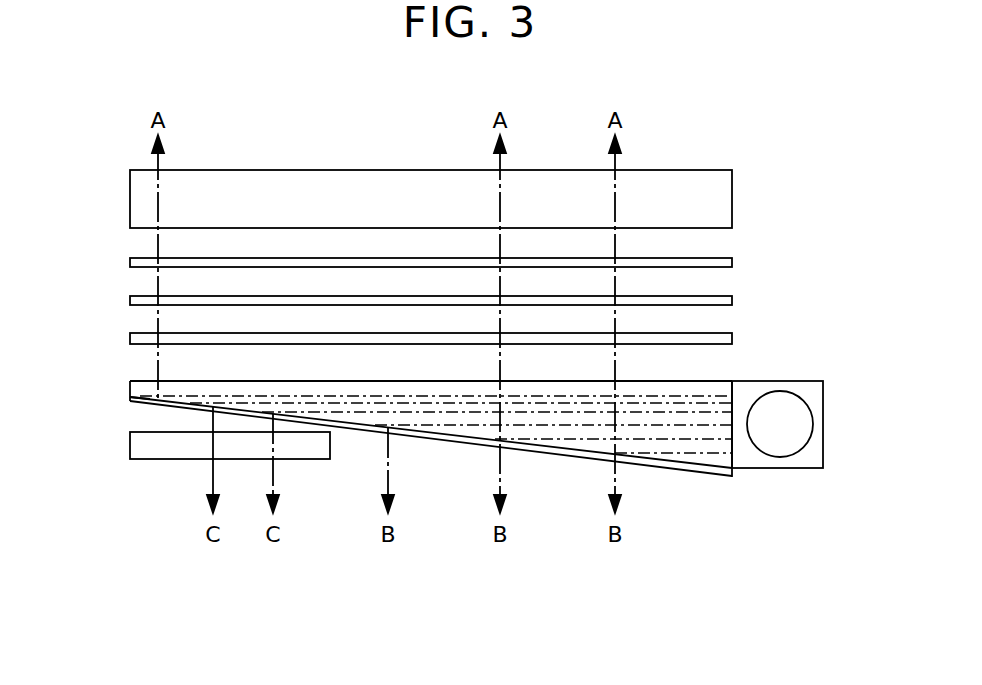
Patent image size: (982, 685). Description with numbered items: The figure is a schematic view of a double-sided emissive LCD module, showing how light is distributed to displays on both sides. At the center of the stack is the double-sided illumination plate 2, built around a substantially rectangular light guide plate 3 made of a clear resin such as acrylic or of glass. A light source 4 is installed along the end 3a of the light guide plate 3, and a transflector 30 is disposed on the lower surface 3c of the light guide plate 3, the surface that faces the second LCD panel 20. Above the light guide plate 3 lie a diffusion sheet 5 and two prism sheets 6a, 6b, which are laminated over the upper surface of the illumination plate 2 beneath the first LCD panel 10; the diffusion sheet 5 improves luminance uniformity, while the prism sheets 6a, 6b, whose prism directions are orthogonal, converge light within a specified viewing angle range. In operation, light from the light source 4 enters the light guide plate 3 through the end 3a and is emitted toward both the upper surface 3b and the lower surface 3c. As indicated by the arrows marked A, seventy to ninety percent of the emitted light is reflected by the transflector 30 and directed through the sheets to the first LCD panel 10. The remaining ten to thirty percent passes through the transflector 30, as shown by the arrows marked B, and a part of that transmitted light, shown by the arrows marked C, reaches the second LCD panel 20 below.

The double-sided illumination plate 2 is at (444, 466).
The light guide plate 3 is at (400, 443).
The end 3a is at (778, 438).
The upper surface 3b is at (648, 381).
The lower surface 3c is at (168, 405).
The transflector 30 is at (558, 449).
The light source 4 is at (787, 445).
The diffusion sheet 5 is at (732, 340).
The prism sheet 6a is at (732, 302).
The prism sheet 6b is at (732, 264).
The first LCD panel 10 is at (732, 190).
The second LCD panel 20 is at (119, 452).